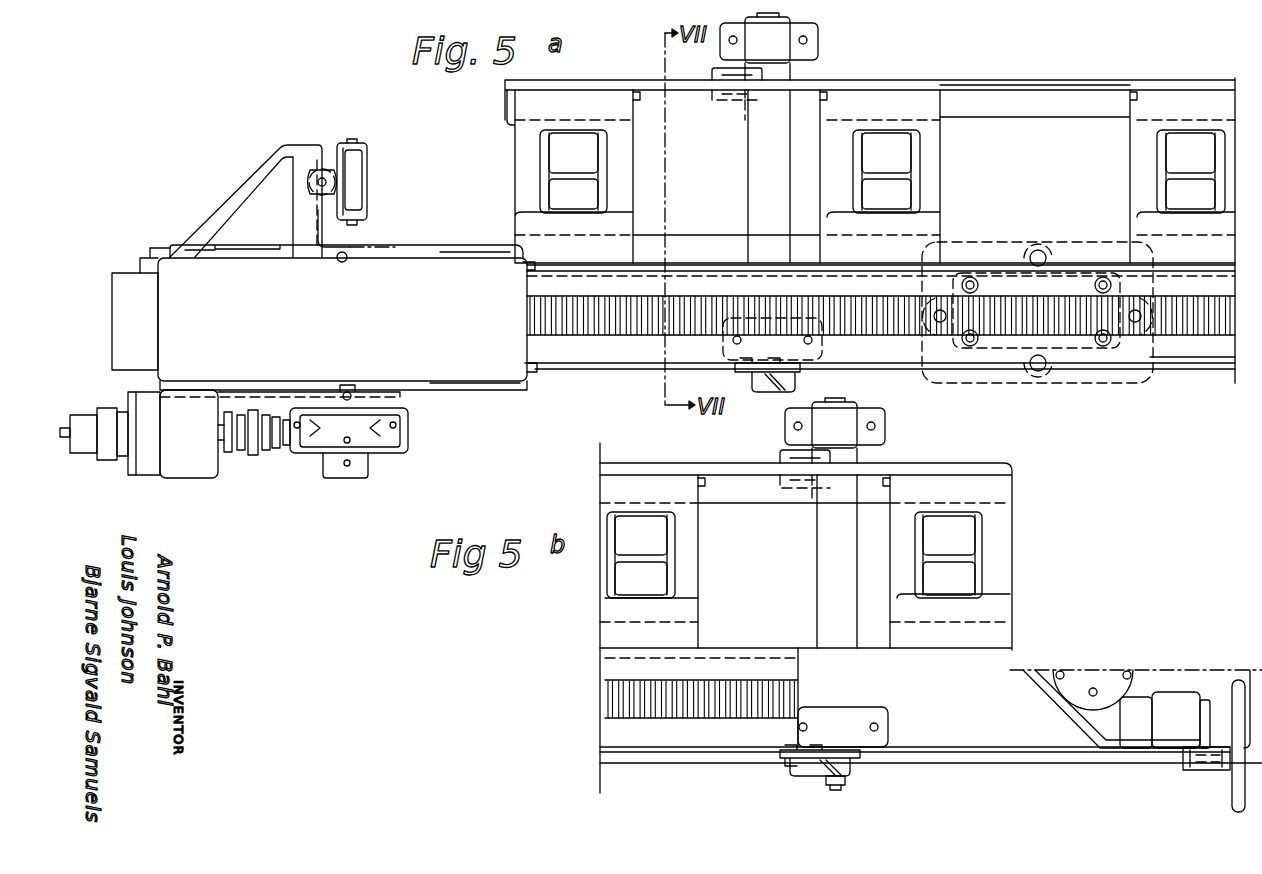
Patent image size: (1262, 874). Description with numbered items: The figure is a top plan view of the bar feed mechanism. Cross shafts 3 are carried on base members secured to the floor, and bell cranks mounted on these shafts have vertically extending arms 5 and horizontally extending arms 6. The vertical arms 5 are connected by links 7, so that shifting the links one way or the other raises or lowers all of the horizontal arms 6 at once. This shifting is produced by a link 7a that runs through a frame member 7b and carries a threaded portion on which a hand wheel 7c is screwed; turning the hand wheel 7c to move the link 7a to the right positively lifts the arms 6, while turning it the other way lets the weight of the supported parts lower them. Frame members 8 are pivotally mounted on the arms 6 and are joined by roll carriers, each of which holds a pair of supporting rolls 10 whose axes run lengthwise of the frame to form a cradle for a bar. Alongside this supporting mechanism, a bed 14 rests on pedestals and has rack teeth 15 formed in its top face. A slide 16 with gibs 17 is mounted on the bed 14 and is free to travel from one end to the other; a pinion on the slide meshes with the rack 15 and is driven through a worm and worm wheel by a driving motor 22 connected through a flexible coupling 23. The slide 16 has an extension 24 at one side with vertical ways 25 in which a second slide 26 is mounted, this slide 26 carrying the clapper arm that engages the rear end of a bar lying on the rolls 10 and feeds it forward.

In FIG. 5B, the cross shaft 3 is at (838, 788).
In FIG. 5A, the vertically extending arm 5 is at (734, 376).
In FIG. 5B, the vertically extending arm 5 is at (814, 770).
In FIG. 5A, the horizontally extending arm 6 is at (718, 72).
In FIG. 5A, the link 7 is at (918, 370).
In FIG. 5B, the link 7 is at (702, 755).
In FIG. 5B, the link 7a is at (973, 757).
In FIG. 5B, the frame member 7b is at (1202, 770).
In FIG. 5B, the hand wheel 7c is at (1238, 680).
In FIG. 5A, the frame member 8 is at (512, 138).
In FIG. 5A, the supporting roll 10 is at (570, 195).
In FIG. 5B, the supporting roll 10 is at (960, 583).
In FIG. 5A, the bed 14 is at (622, 362).
In FIG. 5A, the rack teeth 15 is at (637, 322).
In FIG. 5B, the rack teeth 15 is at (615, 702).
In FIG. 5A, the slide 16 is at (347, 317).
In FIG. 5A, the gib 17 is at (148, 270).
In FIG. 5A, the driving motor 22 is at (208, 468).
In FIG. 5A, the flexible coupling 23 is at (252, 456).
In FIG. 5A, the extension 24 is at (232, 212).
In FIG. 5A, the vertical ways 25 is at (321, 160).
In FIG. 5A, the slide 26 is at (344, 143).